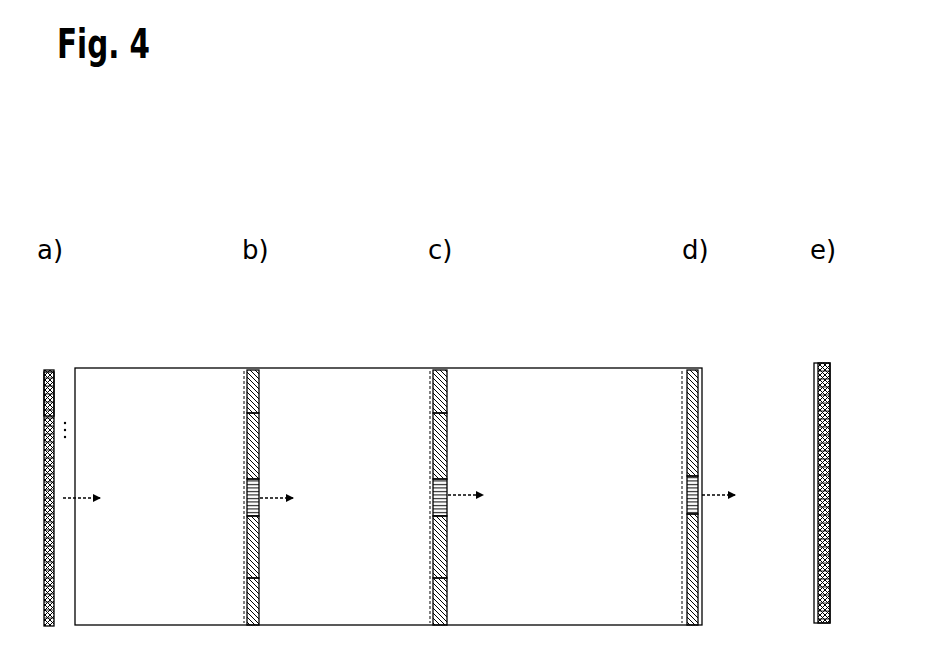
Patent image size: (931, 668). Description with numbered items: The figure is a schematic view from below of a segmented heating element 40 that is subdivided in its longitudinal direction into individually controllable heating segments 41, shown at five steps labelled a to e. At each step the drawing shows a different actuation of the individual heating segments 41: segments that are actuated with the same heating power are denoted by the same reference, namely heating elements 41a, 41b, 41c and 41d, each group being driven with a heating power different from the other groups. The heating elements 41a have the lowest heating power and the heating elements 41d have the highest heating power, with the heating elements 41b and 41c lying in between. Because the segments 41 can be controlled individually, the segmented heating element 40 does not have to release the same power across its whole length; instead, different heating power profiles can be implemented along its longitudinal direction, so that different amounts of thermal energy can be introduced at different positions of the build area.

The segmented heating element 40 is at (52, 367).
The heating segments 41 is at (54, 380).
The heating elements with lowest heating power 41a is at (814, 492).
The heating elements with second-lowest heating power 41b is at (244, 546).
The heating elements with second-highest heating power 41c is at (430, 546).
The heating elements with highest heating power 41d is at (682, 567).